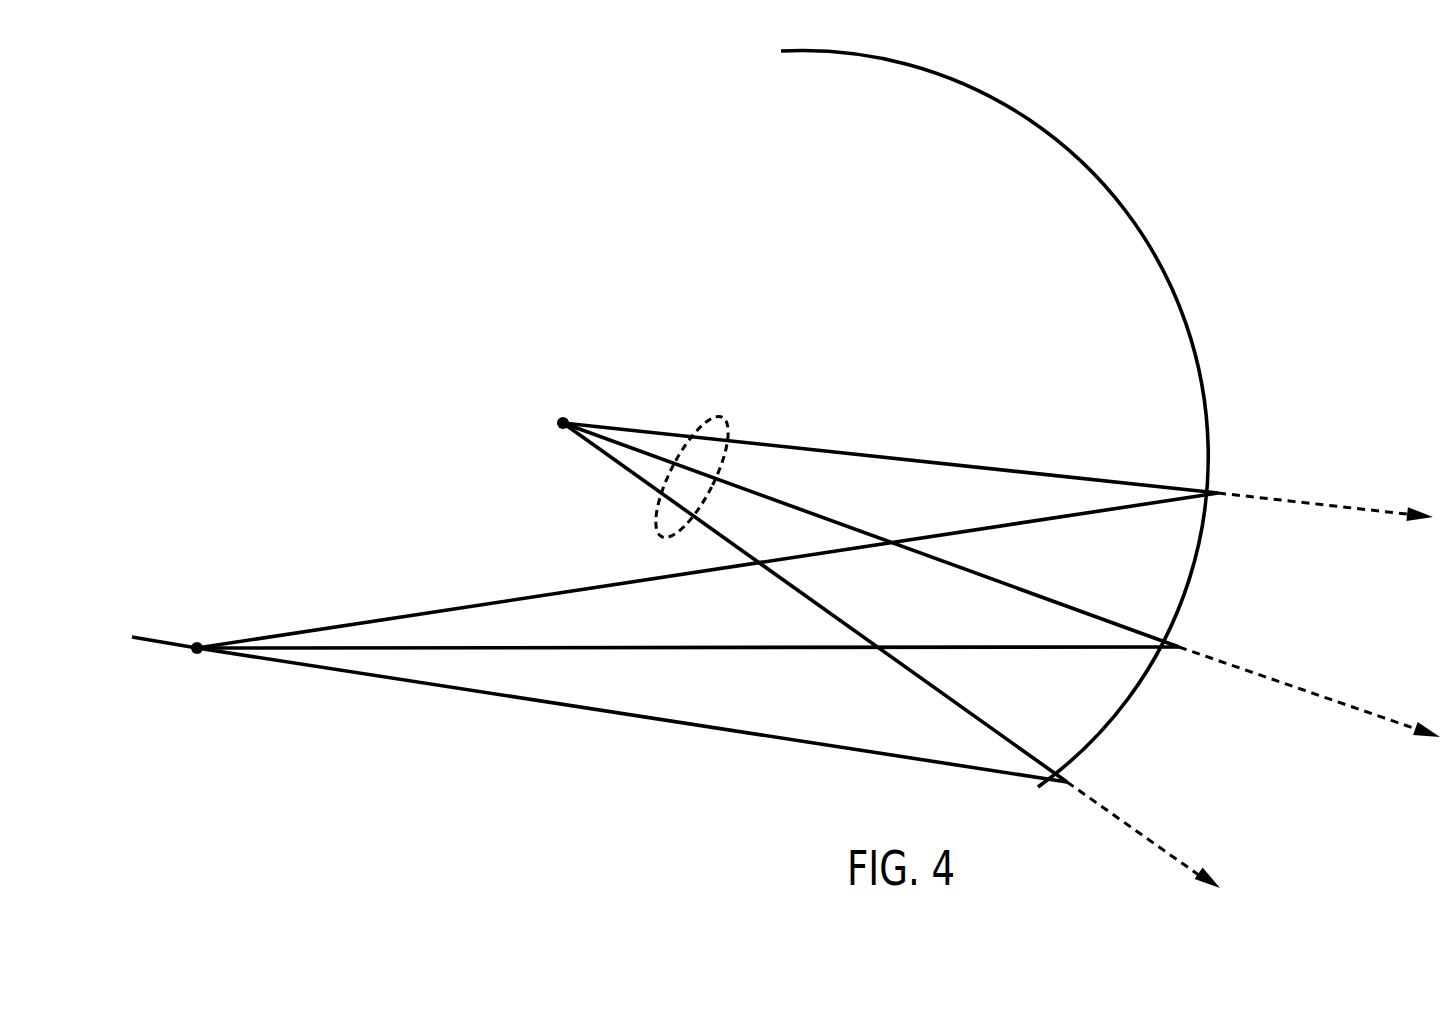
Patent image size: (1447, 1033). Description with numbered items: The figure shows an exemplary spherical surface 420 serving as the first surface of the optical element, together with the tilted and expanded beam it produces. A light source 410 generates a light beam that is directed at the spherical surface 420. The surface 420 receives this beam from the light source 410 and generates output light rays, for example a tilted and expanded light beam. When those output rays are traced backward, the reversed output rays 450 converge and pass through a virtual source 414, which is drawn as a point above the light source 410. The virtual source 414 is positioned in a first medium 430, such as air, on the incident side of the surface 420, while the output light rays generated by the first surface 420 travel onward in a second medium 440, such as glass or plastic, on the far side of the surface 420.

The light source 410 is at (663, 637).
The virtual source 414 is at (561, 387).
The spherical surface 420 is at (1168, 243).
The first medium 430 is at (866, 166).
The second medium 440 is at (1351, 352).
The reversed output rays 450 is at (733, 418).